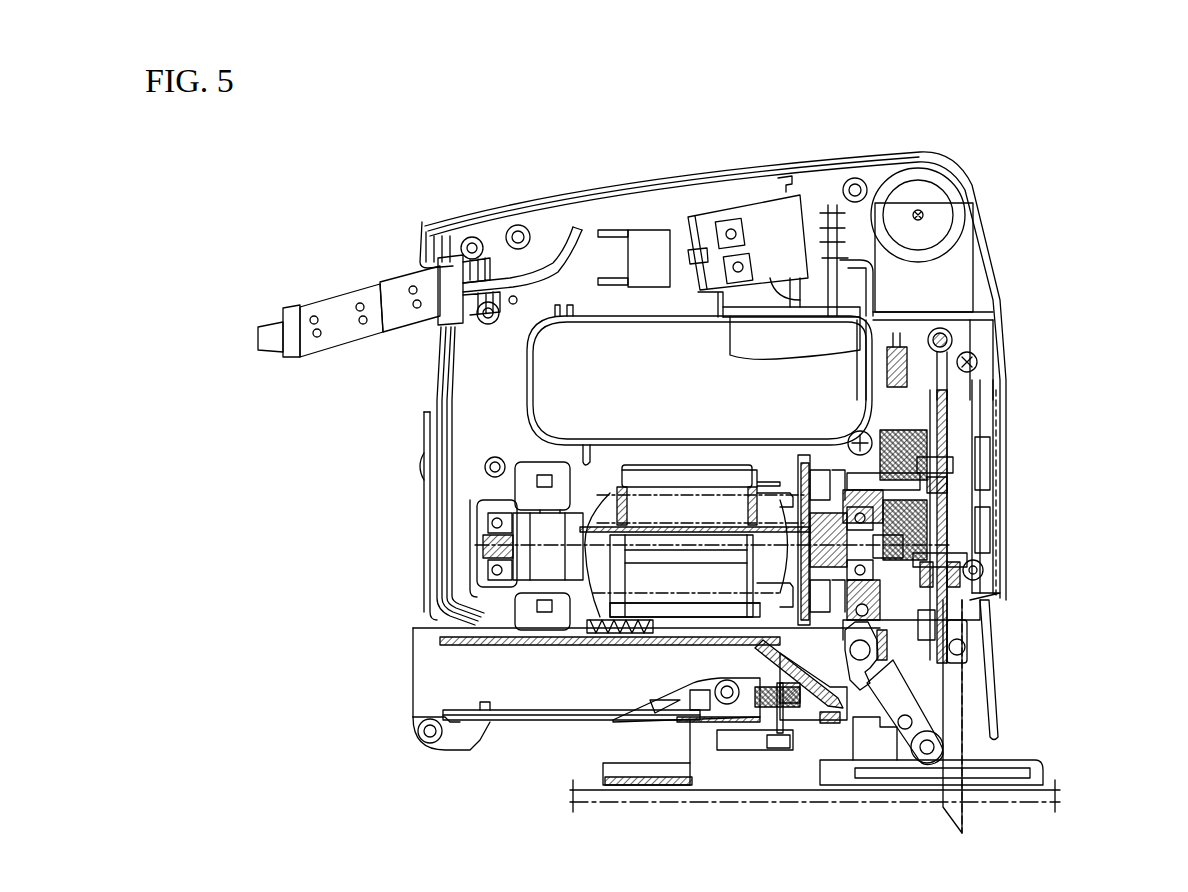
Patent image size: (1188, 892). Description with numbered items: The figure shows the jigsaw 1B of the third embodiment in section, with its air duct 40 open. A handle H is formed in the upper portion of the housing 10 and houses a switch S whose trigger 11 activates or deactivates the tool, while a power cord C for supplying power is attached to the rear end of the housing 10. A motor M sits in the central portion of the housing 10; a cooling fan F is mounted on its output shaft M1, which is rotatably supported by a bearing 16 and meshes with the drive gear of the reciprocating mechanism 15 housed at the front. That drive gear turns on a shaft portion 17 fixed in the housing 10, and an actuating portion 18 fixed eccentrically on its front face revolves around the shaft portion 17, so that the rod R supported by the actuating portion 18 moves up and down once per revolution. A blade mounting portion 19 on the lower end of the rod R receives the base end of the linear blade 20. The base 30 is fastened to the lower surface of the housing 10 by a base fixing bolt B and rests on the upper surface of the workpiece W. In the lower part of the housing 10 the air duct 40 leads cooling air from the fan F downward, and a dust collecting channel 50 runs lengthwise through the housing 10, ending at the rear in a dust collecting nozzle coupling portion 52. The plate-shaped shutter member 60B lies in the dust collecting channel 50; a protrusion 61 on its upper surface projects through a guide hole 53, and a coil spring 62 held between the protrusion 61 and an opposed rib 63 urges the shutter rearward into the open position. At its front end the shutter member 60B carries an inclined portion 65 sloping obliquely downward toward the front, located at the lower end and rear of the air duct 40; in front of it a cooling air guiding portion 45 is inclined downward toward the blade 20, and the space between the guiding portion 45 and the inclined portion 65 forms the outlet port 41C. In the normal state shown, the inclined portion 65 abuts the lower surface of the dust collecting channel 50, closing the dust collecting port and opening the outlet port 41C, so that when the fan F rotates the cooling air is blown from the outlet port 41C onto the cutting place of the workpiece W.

The jigsaw 1B is at (997, 123).
The handle H is at (686, 175).
The switch S is at (757, 235).
The power cord C is at (315, 300).
The housing 10 is at (438, 363).
The motor M is at (612, 470).
The trigger 11 is at (755, 362).
The cooling fan F is at (825, 462).
The rod R is at (940, 425).
The shaft portion 17 is at (950, 477).
The actuating portion 18 is at (955, 493).
The reciprocating mechanism 15 is at (925, 535).
The output shaft M1 is at (1003, 577).
The bearing 16 is at (960, 612).
The blade mounting portion 19 is at (970, 640).
The air duct 40 is at (900, 635).
The cooling air guiding portion 45 is at (855, 668).
The outlet port 41C is at (935, 715).
The blade 20 is at (965, 745).
The base 30 is at (1040, 766).
The workpiece W is at (1065, 798).
The protrusion 61 is at (565, 653).
The guide hole 53 is at (605, 648).
The dust collecting channel 50 is at (528, 700).
The shutter member 60B is at (500, 720).
The dust collecting nozzle coupling portion 52 is at (465, 718).
The coil spring 62 is at (620, 650).
The rib 63 is at (675, 650).
The inclined portion 65 is at (760, 665).
The base fixing bolt B is at (780, 750).